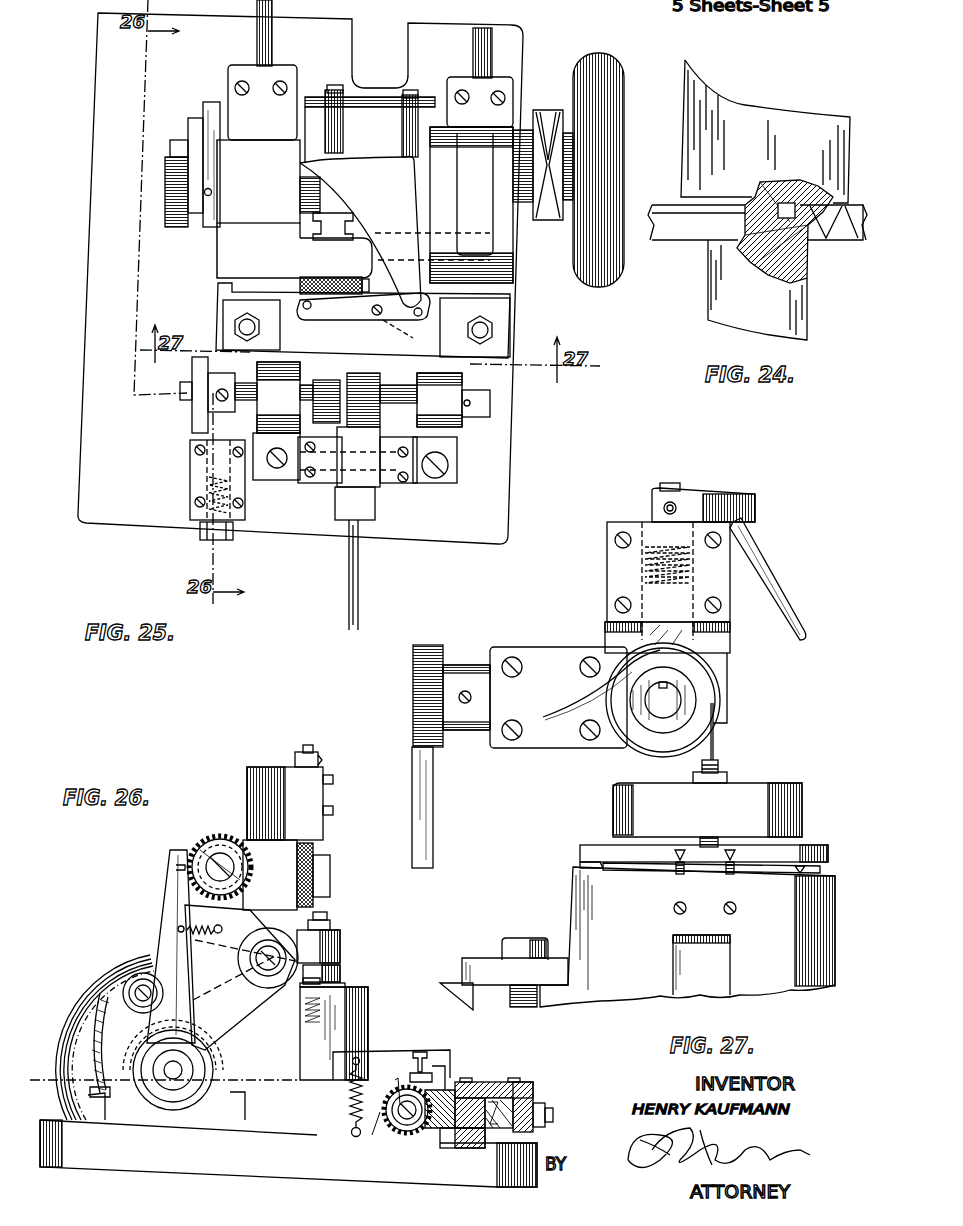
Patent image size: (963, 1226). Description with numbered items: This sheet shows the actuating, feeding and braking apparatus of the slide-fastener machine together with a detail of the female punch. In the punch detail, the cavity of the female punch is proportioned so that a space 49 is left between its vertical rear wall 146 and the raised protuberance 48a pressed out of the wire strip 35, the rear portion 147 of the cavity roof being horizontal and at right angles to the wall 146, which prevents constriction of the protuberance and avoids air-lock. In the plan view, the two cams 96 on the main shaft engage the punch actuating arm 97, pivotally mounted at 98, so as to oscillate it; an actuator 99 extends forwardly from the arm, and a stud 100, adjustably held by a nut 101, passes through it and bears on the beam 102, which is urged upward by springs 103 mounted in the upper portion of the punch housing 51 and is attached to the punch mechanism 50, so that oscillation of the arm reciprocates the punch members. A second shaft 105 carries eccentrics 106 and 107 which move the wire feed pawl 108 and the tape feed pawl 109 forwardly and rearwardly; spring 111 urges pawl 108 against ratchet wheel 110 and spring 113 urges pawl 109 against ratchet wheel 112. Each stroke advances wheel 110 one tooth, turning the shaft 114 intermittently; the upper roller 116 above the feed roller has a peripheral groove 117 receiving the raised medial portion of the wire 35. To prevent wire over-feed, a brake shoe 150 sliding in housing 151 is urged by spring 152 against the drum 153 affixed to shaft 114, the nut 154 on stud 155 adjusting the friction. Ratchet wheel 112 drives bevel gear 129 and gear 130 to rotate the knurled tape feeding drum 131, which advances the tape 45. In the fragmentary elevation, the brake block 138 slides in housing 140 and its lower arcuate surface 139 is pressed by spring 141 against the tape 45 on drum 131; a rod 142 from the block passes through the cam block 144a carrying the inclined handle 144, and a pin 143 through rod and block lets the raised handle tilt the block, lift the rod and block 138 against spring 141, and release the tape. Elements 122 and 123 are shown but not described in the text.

In FIG. 25, the wire strip 35 is at (359, 608).
In FIG. 25, the tape 45 is at (370, 283).
In FIG. 27, the tape 45 is at (720, 735).
In FIG. 24, the protuberance 48a is at (812, 200).
In FIG. 24, the space 49 is at (775, 178).
In FIG. 25, the punch mechanism 50 is at (409, 336).
In FIG. 27, the punch mechanism 50 is at (656, 876).
In FIG. 26, the punch mechanism 50 is at (330, 977).
In FIG. 25, the punch housing 51 is at (470, 305).
In FIG. 27, the punch housing 51 is at (572, 893).
In FIG. 26, the punch housing 51 is at (370, 1005).
In FIG. 25, the cams 96 is at (415, 85).
In FIG. 25, the punch actuating arm 97 is at (420, 105).
In FIG. 26, the punch actuating arm 97 is at (157, 965).
In FIG. 25, the pivot 98 is at (516, 250).
In FIG. 26, the pivot 98 is at (335, 930).
In FIG. 27, the actuator 99 is at (614, 814).
In FIG. 26, the actuator 99 is at (340, 966).
In FIG. 27, the stud 100 is at (720, 763).
In FIG. 26, the stud 100 is at (322, 912).
In FIG. 27, the nut 101 is at (728, 777).
In FIG. 26, the nut 101 is at (330, 921).
In FIG. 25, the beam 102 is at (320, 319).
In FIG. 27, the beam 102 is at (610, 845).
In FIG. 27, the springs 103 is at (580, 863).
In FIG. 26, the springs 103 is at (346, 984).
In FIG. 26, the shaft 105 is at (183, 1070).
In FIG. 26, the eccentric 106 is at (176, 1102).
In FIG. 26, the eccentric 107 is at (162, 1085).
In FIG. 25, the wire feed pawl 108 is at (205, 280).
In FIG. 26, the wire feed pawl 108 is at (410, 1057).
In FIG. 25, the tape feed pawl 109 is at (178, 142).
In FIG. 27, the tape feed pawl 109 is at (412, 812).
In FIG. 26, the tape feed pawl 109 is at (172, 890).
In FIG. 25, the ratchet wheel 110 is at (190, 420).
In FIG. 26, the ratchet wheel 110 is at (445, 1080).
In FIG. 26, the spring 111 is at (348, 1105).
In FIG. 25, the ratchet wheel 112 is at (178, 227).
In FIG. 27, the ratchet wheel 112 is at (413, 715).
In FIG. 26, the ratchet wheel 112 is at (198, 840).
In FIG. 26, the spring 113 is at (200, 919).
In FIG. 25, the shaft 114 is at (482, 418).
In FIG. 26, the shaft 114 is at (407, 1120).
In FIG. 25, the roller 116 is at (345, 385).
In FIG. 25, the peripheral groove 117 is at (365, 410).
In FIG. 25, the slide 122 is at (388, 514).
In FIG. 25, the guide block 123 is at (330, 475).
In FIG. 25, the bevel gear 129 is at (322, 188).
In FIG. 25, the gear 130 is at (350, 217).
In FIG. 25, the knurled tape feeding drum 131 is at (303, 278).
In FIG. 27, the knurled tape feeding drum 131 is at (650, 748).
In FIG. 26, the knurled tape feeding drum 131 is at (296, 875).
In FIG. 27, the brake block 138 is at (648, 640).
In FIG. 27, the lower arcuate surface 139 is at (680, 668).
In FIG. 27, the housing 140 is at (615, 585).
In FIG. 26, the housing 140 is at (334, 798).
In FIG. 27, the spring 141 is at (655, 545).
In FIG. 27, the rod 142 is at (675, 483).
In FIG. 26, the rod 142 is at (308, 745).
In FIG. 27, the pin 143 is at (665, 503).
In FIG. 26, the pin 143 is at (320, 762).
In FIG. 27, the handle 144 is at (762, 545).
In FIG. 27, the cam block 144a is at (708, 490).
In FIG. 26, the cam block 144a is at (295, 755).
In FIG. 24, the rear wall 146 is at (760, 195).
In FIG. 24, the rear portion of the cavity roof 147 is at (796, 198).
In FIG. 25, the brake shoe 150 is at (205, 475).
In FIG. 26, the brake shoe 150 is at (442, 1130).
In FIG. 25, the housing 151 is at (190, 462).
In FIG. 26, the housing 151 is at (490, 1090).
In FIG. 25, the spring 152 is at (232, 497).
In FIG. 26, the spring 152 is at (535, 1095).
In FIG. 25, the drum 153 is at (215, 385).
In FIG. 26, the drum 153 is at (395, 1130).
In FIG. 26, the nut 154 is at (546, 1100).
In FIG. 26, the stud 155 is at (554, 1114).